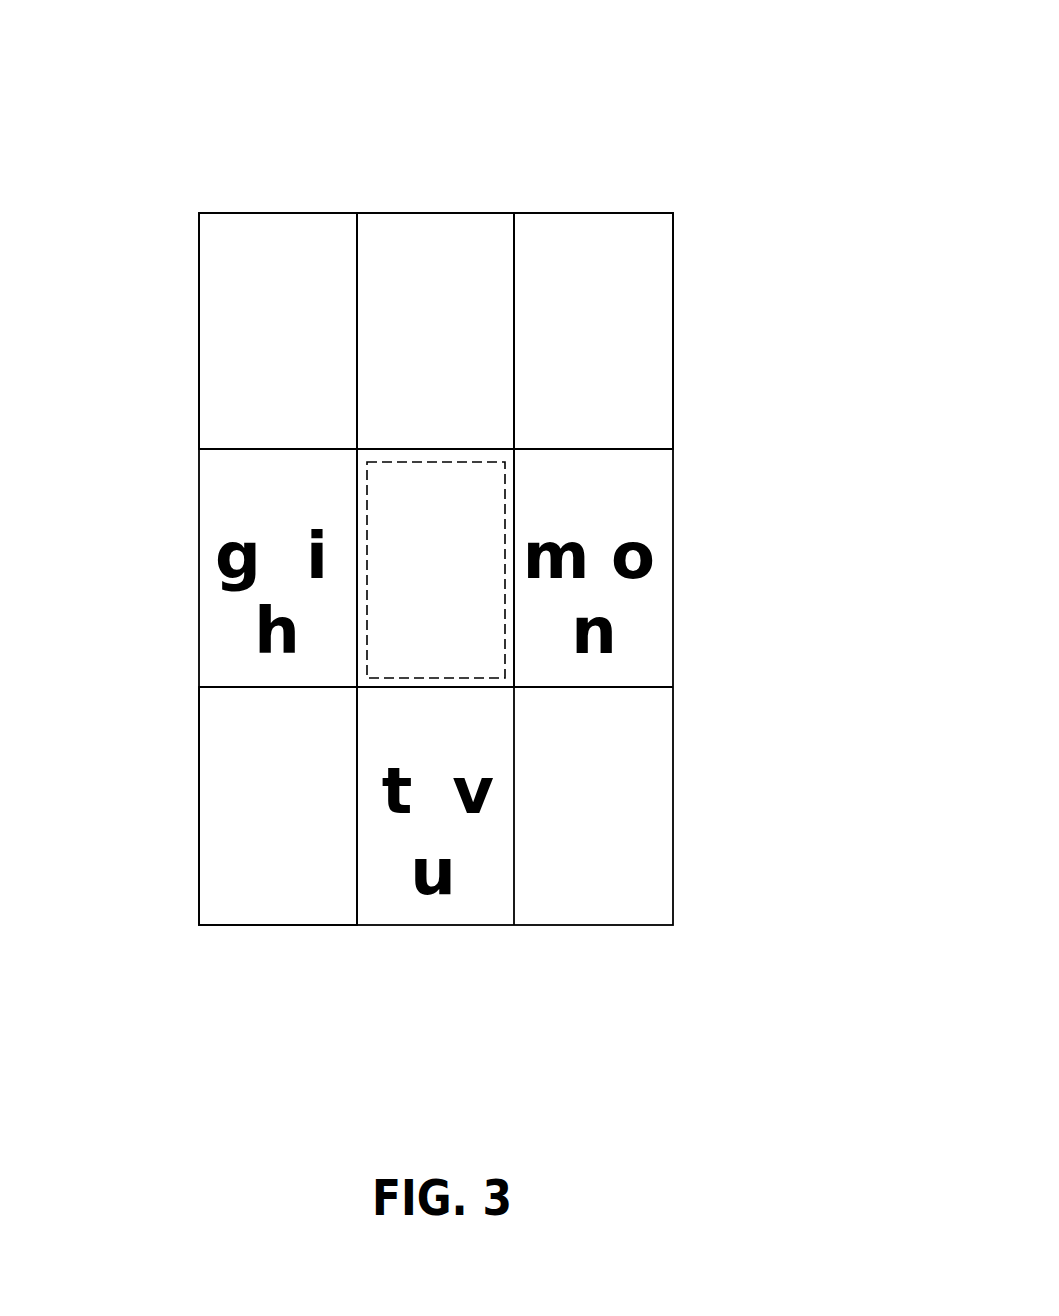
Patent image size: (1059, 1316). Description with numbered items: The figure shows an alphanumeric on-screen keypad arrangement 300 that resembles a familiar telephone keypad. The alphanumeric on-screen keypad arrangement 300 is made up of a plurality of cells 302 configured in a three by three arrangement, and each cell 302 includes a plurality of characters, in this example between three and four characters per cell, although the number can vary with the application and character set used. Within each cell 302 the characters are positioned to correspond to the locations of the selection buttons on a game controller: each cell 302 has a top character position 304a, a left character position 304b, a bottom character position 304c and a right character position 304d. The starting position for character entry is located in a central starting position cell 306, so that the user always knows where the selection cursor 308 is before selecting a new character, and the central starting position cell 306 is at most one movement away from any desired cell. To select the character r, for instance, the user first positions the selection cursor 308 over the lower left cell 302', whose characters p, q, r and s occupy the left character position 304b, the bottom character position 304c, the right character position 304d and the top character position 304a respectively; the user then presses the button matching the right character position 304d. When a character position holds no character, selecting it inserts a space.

The alphanumeric on-screen keypad arrangement 300 is at (715, 87).
The cell 302 is at (436, 226).
The lower left cell 302' is at (208, 806).
The top character position 304a is at (622, 732).
The left character position 304b is at (545, 828).
The bottom character position 304c is at (622, 872).
The right character position 304d is at (650, 797).
The central starting position cell 306 is at (478, 503).
The selection cursor 308 is at (508, 510).